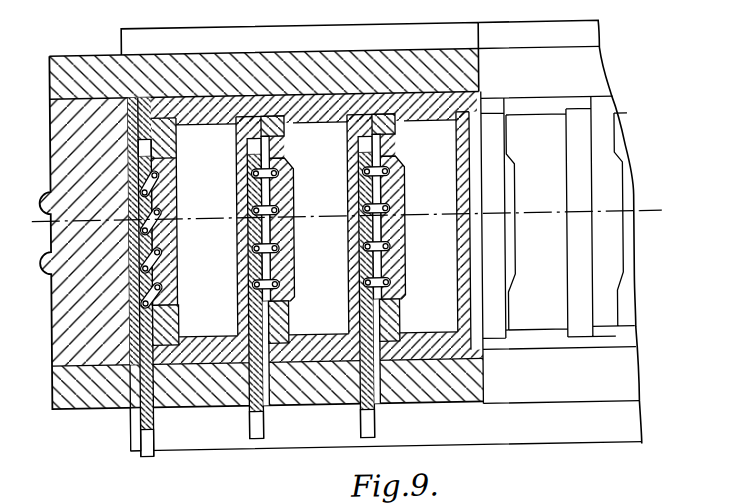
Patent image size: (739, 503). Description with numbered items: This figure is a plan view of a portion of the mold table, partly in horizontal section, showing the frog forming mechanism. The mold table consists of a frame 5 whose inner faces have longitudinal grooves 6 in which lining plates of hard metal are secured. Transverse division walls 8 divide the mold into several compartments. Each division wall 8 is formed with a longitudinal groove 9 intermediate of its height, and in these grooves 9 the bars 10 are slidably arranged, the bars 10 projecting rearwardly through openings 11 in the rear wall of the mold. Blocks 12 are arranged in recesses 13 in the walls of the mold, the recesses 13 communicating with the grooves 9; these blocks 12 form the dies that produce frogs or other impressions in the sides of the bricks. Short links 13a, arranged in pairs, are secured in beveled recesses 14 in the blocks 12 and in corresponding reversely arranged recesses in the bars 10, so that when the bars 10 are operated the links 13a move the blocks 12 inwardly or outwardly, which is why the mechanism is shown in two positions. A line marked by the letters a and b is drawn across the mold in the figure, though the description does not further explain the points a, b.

The frame 5 is at (600, 73).
The longitudinal grooves 6 is at (128, 62).
The transverse division walls 8 is at (290, 330).
The longitudinal grooves 9 is at (137, 140).
The bars 10 is at (130, 424).
The openings 11 is at (158, 395).
The blocks 12 is at (170, 233).
The recesses 13 is at (376, 190).
The short links 13a is at (348, 162).
The beveled recesses 14 is at (258, 272).
The section axis end a is at (325, 217).
The section axis end b is at (659, 209).